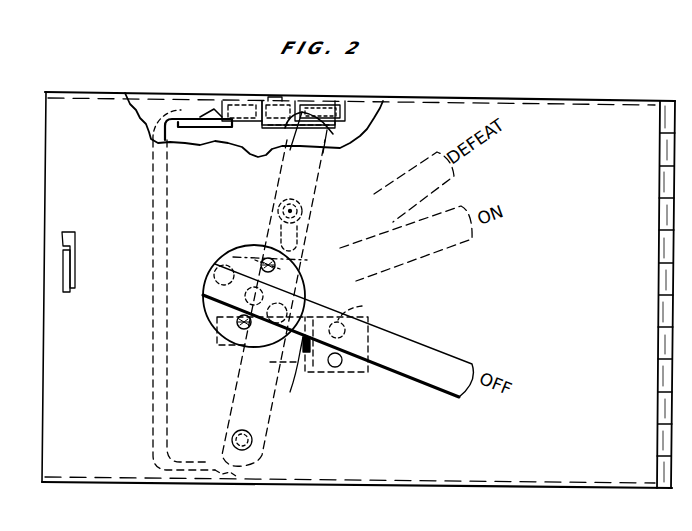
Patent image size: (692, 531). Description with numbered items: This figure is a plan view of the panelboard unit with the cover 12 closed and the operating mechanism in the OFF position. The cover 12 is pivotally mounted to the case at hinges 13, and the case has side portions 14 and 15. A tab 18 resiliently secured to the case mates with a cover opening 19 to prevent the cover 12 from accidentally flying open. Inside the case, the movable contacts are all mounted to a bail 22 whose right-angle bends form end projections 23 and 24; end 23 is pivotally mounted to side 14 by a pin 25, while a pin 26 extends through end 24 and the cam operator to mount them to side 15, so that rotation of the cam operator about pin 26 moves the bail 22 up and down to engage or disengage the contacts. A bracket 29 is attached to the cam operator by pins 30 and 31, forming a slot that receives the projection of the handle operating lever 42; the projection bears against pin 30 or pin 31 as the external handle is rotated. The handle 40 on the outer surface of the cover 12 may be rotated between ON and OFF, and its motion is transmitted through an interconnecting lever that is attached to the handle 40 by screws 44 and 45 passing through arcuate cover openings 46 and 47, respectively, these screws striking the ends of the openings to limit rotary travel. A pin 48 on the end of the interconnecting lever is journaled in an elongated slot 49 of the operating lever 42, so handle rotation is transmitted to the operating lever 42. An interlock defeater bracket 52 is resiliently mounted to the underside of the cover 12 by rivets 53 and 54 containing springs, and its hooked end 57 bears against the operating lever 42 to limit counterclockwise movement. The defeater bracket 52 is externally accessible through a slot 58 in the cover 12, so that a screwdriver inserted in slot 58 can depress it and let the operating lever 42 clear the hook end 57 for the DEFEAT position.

The cover 12 is at (556, 318).
The hinges 13 is at (664, 490).
The side portion 14 is at (355, 489).
The side portion 15 is at (456, 97).
The tab 18 is at (66, 272).
The cover opening 19 is at (66, 240).
The bail 22 is at (153, 292).
The end projection 23 is at (197, 478).
The end projection 24 is at (207, 108).
The pin 25 is at (258, 457).
The pin 26 is at (285, 96).
The bracket 29 is at (345, 115).
The pin 30 is at (345, 133).
The pin 31 is at (280, 128).
The handle 40 is at (423, 357).
The handle operating lever 42 is at (310, 178).
The screw 44 is at (240, 332).
The screw 45 is at (278, 265).
The arcuate cover opening 46 is at (300, 290).
The arcuate cover opening 47 is at (237, 248).
The pin 48 is at (306, 198).
The elongated slot 49 is at (312, 230).
The interlock defeater bracket 52 is at (355, 373).
The rivet 53 is at (334, 368).
The rivet 54 is at (362, 306).
The hooked end 57 is at (242, 112).
The slot 58 is at (298, 375).